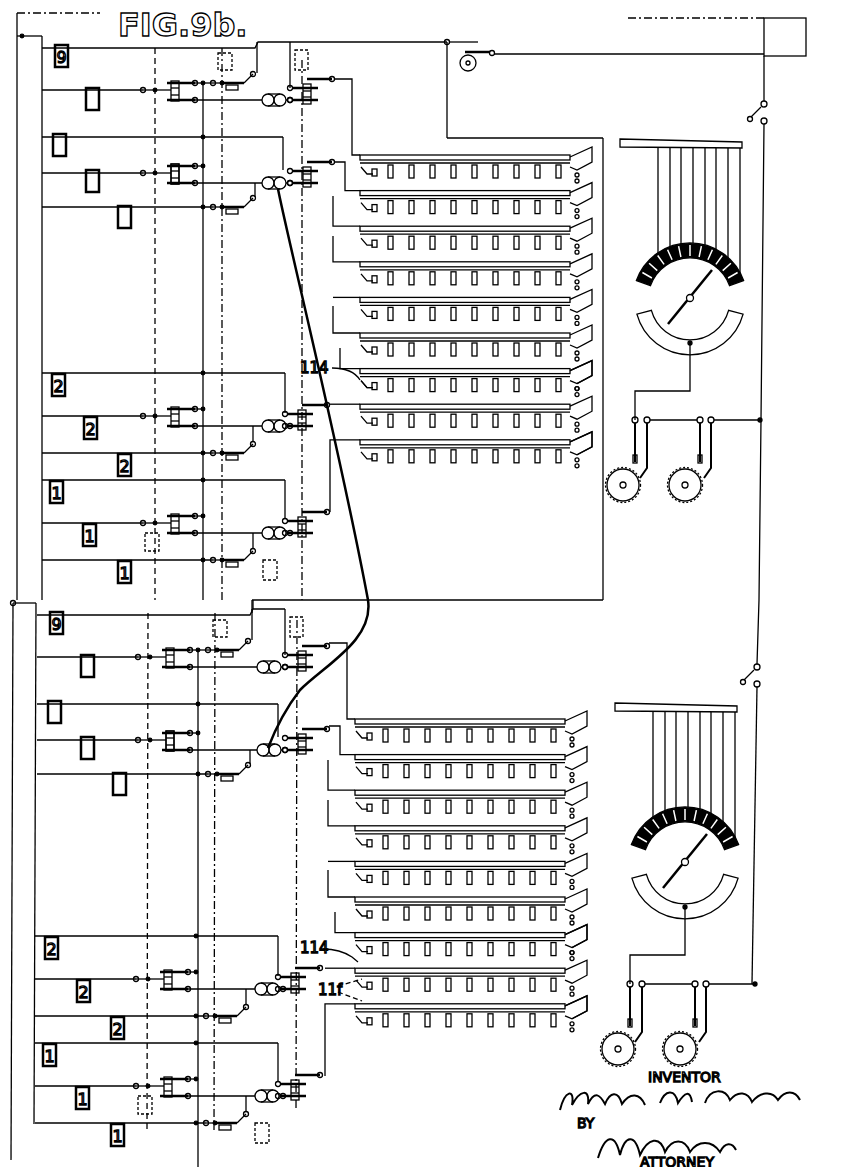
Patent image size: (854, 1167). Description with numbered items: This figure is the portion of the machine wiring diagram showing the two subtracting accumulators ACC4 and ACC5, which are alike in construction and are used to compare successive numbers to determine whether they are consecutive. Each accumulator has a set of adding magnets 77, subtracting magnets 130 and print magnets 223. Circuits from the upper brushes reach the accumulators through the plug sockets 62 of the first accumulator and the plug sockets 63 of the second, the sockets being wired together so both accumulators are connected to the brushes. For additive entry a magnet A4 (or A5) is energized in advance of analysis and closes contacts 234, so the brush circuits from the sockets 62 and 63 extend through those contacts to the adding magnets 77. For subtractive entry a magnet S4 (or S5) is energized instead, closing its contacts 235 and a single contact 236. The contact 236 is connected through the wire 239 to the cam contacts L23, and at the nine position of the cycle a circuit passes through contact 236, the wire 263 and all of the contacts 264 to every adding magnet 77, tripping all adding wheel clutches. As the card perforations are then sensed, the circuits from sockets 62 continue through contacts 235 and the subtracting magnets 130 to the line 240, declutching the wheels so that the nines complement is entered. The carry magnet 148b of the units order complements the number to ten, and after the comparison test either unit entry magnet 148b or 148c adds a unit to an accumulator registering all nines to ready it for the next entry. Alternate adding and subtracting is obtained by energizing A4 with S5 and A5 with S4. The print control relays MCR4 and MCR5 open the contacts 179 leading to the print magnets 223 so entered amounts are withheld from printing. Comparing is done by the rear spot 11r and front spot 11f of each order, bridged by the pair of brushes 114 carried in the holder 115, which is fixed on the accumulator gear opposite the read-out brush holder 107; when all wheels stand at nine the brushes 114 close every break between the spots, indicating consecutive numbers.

The line 240 is at (17, 284).
The adding magnets 77 is at (85, 97).
The print magnets 223 is at (68, 143).
The contacts 264 is at (165, 165).
The contacts 234 is at (172, 178).
The single contact 236 is at (242, 84).
The contacts 179 is at (322, 94).
The subtracting magnets 130 is at (118, 222).
The contacts 235 is at (244, 212).
The wire 263 is at (203, 248).
The plug sockets 62 is at (266, 177).
The plug sockets 63 is at (259, 745).
The magnet S4 is at (216, 62).
The magnet S5 is at (211, 631).
The print control relay MCR4 is at (309, 63).
The print control relay MCR5 is at (304, 631).
The magnet A4 is at (160, 552).
The magnet A5 is at (153, 1112).
The carry magnet 148b is at (279, 576).
The unit entry magnet 148c is at (271, 1134).
The subtracting accumulator 4 ACC4 is at (266, 285).
The subtracting accumulator 5 ACC5 is at (255, 854).
The cam contacts L23 is at (480, 48).
The wire 239 is at (714, 50).
The brushes 114 is at (578, 375).
The rear spot 11r is at (585, 428).
The front spot 11f is at (372, 422).
The brush holder 107 is at (575, 439).
The holder 115 is at (488, 400).